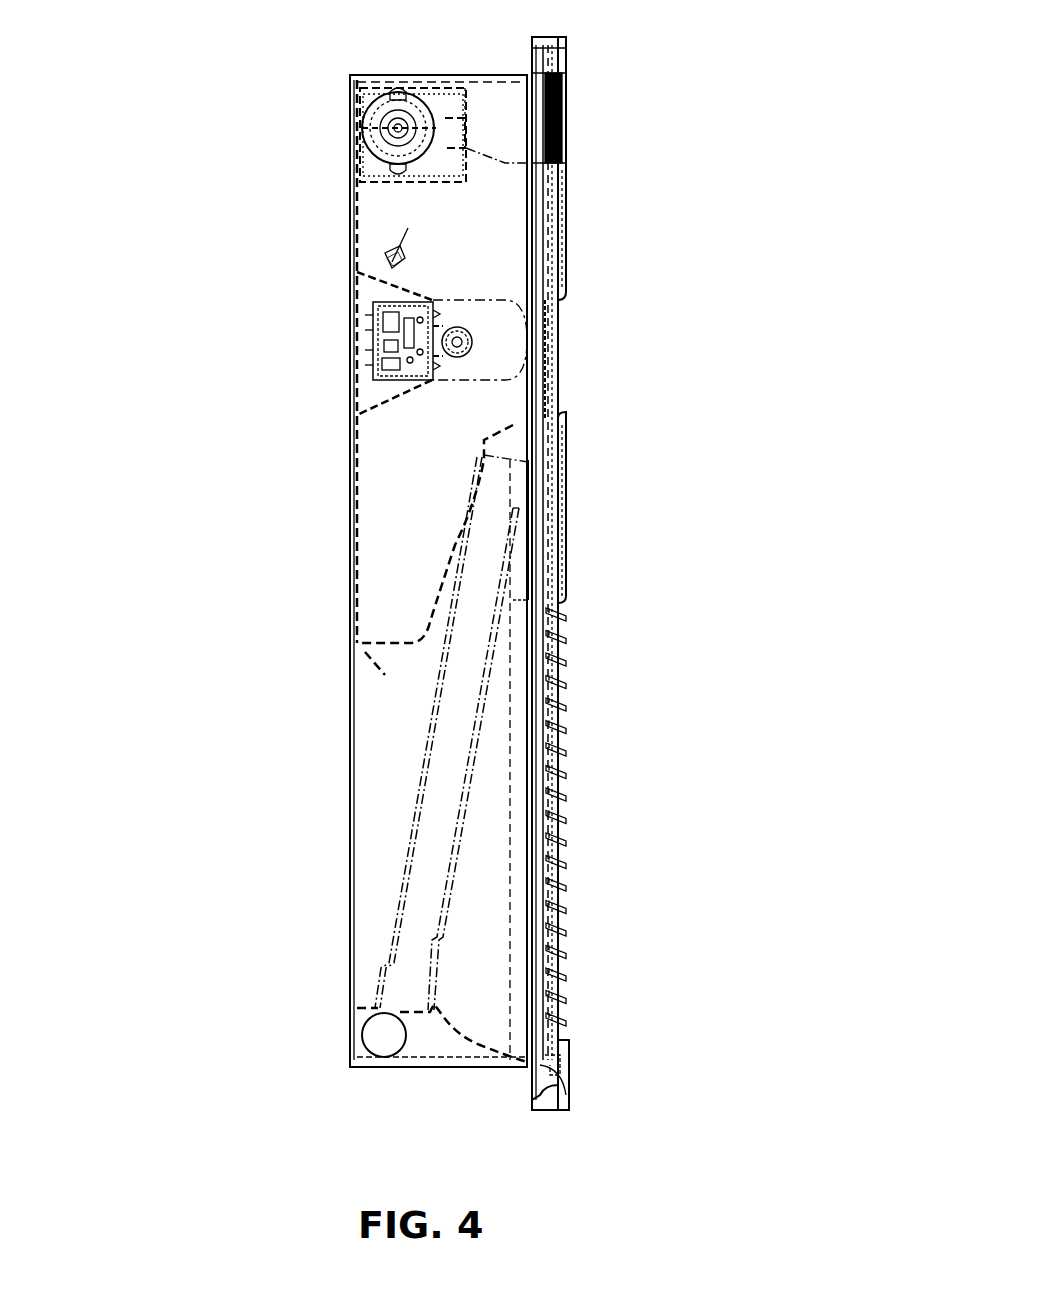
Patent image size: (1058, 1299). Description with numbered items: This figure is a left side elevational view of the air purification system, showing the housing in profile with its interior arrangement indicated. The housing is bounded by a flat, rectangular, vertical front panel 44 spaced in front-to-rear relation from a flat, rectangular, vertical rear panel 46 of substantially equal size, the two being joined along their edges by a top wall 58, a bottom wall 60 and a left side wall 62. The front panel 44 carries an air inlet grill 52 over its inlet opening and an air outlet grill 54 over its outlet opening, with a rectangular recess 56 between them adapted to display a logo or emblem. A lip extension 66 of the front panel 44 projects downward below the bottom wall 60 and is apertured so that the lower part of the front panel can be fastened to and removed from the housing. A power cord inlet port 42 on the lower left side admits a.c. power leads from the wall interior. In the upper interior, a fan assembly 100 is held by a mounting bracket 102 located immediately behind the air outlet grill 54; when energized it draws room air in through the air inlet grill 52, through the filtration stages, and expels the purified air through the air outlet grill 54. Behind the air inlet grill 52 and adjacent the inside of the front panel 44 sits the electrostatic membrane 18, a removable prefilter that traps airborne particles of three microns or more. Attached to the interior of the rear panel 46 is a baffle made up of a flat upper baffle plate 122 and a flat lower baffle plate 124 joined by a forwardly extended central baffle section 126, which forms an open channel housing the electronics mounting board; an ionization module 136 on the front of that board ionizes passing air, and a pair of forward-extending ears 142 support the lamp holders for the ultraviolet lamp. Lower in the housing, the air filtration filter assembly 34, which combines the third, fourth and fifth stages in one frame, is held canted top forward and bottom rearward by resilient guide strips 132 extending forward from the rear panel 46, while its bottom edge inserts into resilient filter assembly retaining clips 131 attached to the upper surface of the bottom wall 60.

The electrostatic membrane 18 is at (512, 712).
The air filtration filter assembly 34 is at (418, 817).
The power cord inlet port 42 is at (385, 1035).
The front panel 44 is at (537, 248).
The rear panel 46 is at (355, 482).
The air inlet grill 52 is at (568, 822).
The air outlet grill 54 is at (572, 122).
The rectangular recess 56 is at (563, 375).
The top wall 58 is at (415, 76).
The bottom wall 60 is at (415, 1068).
The left side wall 62 is at (413, 508).
The lip extension 66 is at (568, 1052).
The fan assembly 100 is at (337, 117).
The mounting bracket 102 is at (500, 165).
The upper baffle plate 122 is at (355, 190).
The lower baffle plate 124 is at (360, 530).
The central baffle section 126 is at (365, 290).
The filter assembly retaining clips 131 is at (470, 1030).
The guide strips 132 is at (428, 598).
The ionization module 136 is at (395, 248).
The ears 142 is at (500, 342).